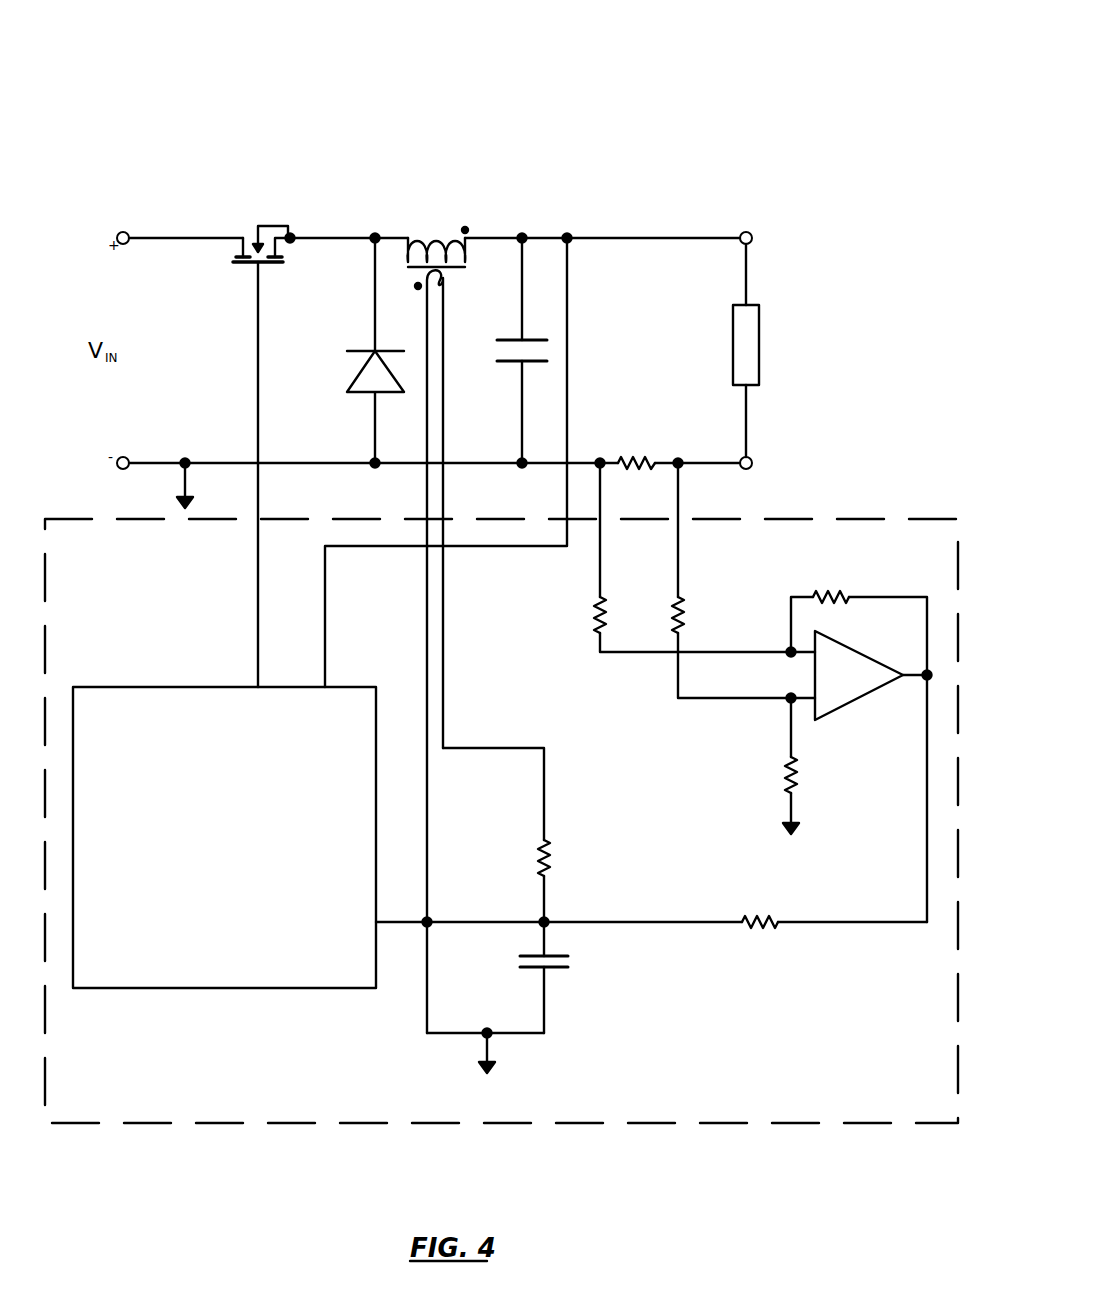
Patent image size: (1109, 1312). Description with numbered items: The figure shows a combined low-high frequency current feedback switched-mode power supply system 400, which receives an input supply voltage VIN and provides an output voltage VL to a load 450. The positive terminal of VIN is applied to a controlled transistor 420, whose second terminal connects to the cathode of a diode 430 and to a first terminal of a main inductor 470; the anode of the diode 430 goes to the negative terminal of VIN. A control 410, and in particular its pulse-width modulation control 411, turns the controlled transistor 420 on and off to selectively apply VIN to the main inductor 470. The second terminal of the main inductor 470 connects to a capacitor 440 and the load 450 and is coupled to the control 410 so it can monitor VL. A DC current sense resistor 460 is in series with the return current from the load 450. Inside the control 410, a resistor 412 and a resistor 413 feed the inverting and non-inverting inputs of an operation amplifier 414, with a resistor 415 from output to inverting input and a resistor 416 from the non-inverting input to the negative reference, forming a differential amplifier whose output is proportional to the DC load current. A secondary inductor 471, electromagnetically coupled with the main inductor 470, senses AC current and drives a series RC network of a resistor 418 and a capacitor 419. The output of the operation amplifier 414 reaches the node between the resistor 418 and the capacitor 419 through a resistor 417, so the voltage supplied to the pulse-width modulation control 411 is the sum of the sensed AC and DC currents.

The switched-mode power supply system 400 is at (872, 42).
The control 410 is at (952, 1114).
The pulse-width modulation control 411 is at (203, 862).
The resistor 412 is at (595, 620).
The resistor 413 is at (684, 606).
The operation amplifier 414 is at (820, 720).
The resistor 415 is at (840, 596).
The resistor 416 is at (790, 758).
The resistor 417 is at (760, 916).
The resistor 418 is at (550, 848).
The capacitor 419 is at (553, 968).
The controlled transistor 420 is at (245, 266).
The diode 430 is at (372, 350).
The capacitor 440 is at (520, 364).
The load 450 is at (760, 326).
The DC current sense resistor 460 is at (640, 456).
The main inductor 470 is at (456, 236).
The secondary inductor 471 is at (445, 280).